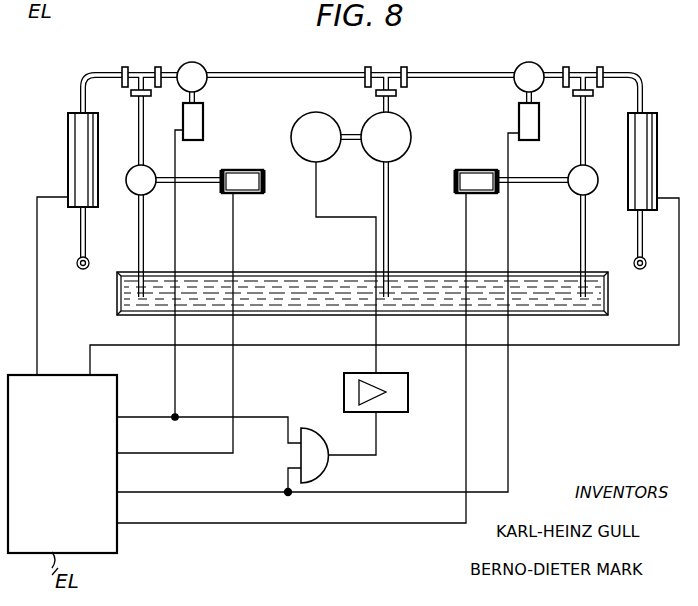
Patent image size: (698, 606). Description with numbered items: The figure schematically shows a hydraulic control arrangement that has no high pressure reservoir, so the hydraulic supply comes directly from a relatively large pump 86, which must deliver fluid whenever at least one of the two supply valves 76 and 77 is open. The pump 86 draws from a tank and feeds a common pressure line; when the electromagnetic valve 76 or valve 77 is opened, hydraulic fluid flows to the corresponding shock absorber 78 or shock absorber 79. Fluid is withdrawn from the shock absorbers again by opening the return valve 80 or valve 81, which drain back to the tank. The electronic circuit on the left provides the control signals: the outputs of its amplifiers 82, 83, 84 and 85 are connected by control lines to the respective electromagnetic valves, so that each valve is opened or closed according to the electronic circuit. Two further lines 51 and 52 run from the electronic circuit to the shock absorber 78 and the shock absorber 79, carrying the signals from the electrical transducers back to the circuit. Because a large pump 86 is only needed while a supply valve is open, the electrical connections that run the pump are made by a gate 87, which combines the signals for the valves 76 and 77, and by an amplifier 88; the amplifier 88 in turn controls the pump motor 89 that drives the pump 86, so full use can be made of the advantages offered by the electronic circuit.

The control line to cylinder 78 51 is at (37, 355).
The control line to cylinder 79 52 is at (100, 362).
The valve 76 is at (206, 68).
The valve 77 is at (540, 68).
The shock absorber 78 is at (68, 141).
The shock absorber 79 is at (657, 142).
The valve 80 is at (129, 167).
The valve 81 is at (596, 170).
The amplifier output 82 is at (192, 286).
The amplifier output 83 is at (158, 329).
The amplifier output 84 is at (301, 319).
The amplifier output 85 is at (274, 364).
The pump 86 is at (411, 138).
The gate 87 is at (318, 478).
The amplifier 88 is at (408, 381).
The pump motor 89 is at (291, 138).